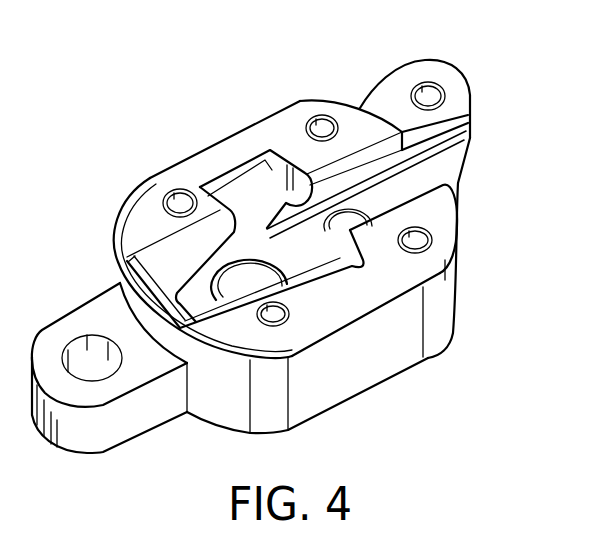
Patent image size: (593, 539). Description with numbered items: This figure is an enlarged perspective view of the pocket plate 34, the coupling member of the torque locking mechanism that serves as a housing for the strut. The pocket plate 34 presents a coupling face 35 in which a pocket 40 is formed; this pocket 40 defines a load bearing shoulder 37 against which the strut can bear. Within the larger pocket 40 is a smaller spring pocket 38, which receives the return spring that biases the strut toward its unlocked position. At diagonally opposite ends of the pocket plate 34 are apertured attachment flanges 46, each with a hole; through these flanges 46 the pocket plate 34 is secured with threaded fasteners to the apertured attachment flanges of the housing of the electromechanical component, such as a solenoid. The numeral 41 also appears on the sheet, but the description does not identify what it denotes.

The pocket plate 34 is at (464, 268).
The coupling face 35 is at (205, 170).
The load bearing shoulder 37 is at (145, 277).
The spring pocket 38 is at (248, 280).
The pocket 40 is at (312, 233).
The bracket portion 41 is at (527, 528).
The apertured attachment flanges 46 is at (423, 70).